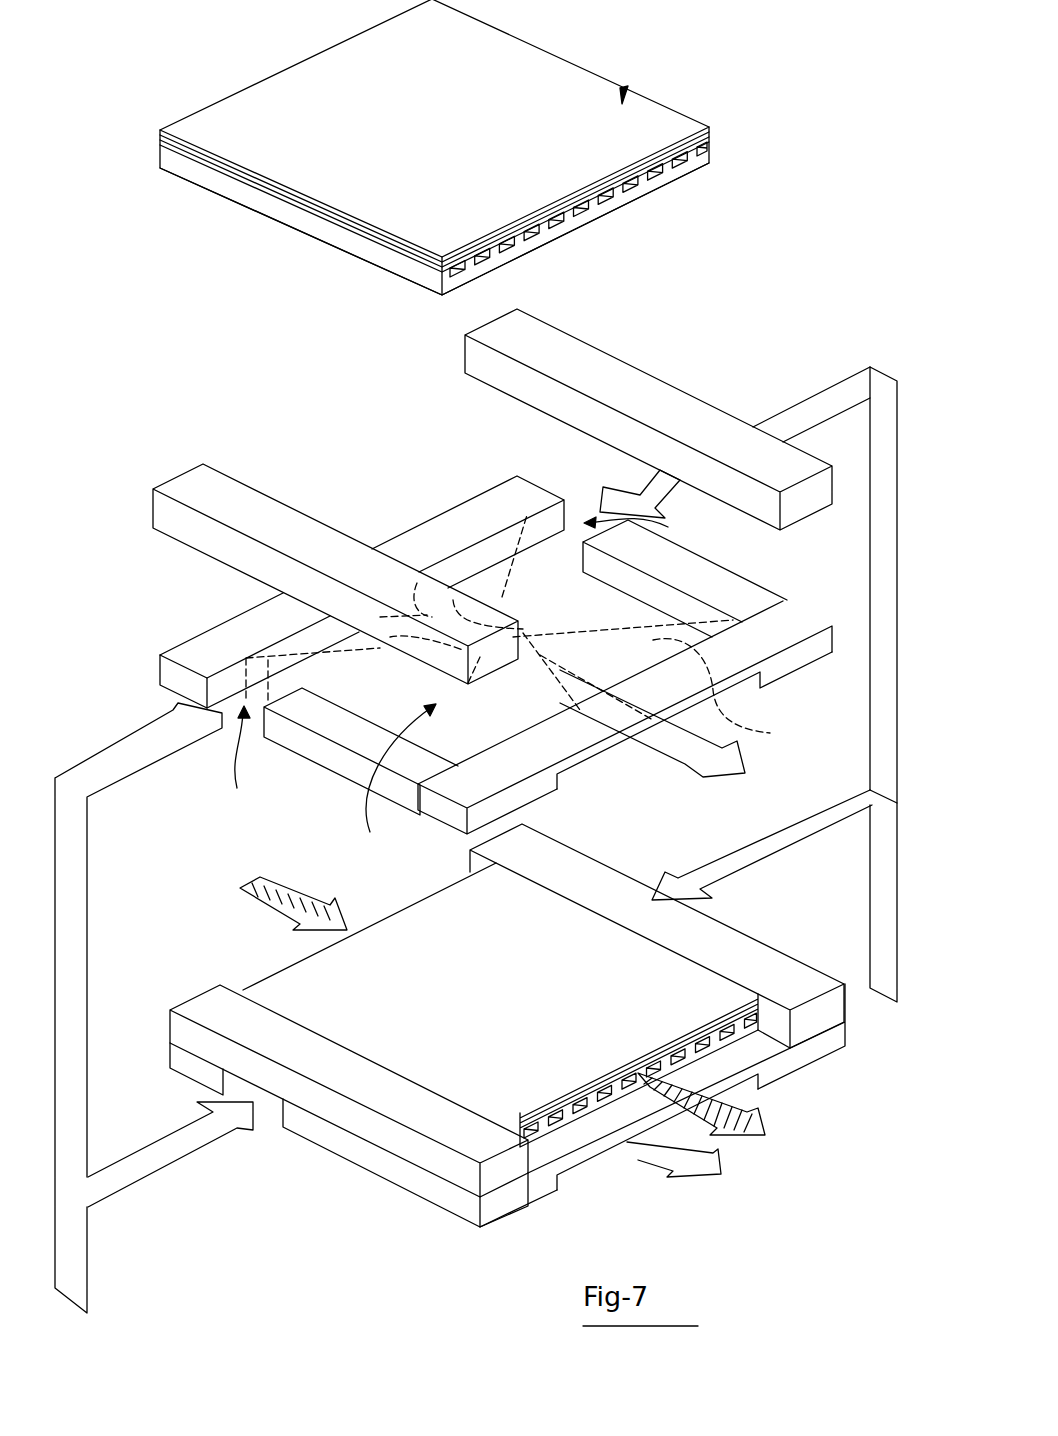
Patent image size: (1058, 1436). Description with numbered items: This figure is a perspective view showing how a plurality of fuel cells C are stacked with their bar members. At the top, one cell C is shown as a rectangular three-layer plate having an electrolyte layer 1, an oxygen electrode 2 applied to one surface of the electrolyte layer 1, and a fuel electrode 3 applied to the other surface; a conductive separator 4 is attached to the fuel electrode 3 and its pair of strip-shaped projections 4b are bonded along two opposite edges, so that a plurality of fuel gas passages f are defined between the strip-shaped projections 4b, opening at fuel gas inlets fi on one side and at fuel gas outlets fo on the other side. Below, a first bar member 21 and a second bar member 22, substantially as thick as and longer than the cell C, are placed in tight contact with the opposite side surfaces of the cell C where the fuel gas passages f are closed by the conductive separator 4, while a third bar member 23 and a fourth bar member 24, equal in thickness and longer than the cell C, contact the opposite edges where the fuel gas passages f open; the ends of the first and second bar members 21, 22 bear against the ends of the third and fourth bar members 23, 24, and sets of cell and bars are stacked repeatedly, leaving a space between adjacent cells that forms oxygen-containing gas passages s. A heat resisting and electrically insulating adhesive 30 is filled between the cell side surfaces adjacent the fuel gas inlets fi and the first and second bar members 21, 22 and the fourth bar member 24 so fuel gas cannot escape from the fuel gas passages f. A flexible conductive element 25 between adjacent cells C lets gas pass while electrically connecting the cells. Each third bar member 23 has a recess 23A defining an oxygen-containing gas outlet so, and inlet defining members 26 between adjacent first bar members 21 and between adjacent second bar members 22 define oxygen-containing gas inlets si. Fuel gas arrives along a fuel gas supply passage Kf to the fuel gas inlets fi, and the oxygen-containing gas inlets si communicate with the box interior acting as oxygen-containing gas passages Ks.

The fuel gas inlet fi is at (479, 573).
The conductive separator 4 is at (623, 36).
The fuel cell C is at (626, 88).
The oxygen electrode 2 is at (668, 113).
The electrolyte layer 1 is at (710, 134).
The strip-shaped projection 4b is at (703, 147).
The fuel electrode 3 is at (676, 158).
The fuel gas passage f is at (578, 212).
The fuel gas outlet fo is at (590, 223).
The second bar member 22 is at (480, 375).
The first bar member 21 is at (222, 490).
The oxygen-containing gas passage Ks is at (806, 410).
The fourth bar member 24 is at (207, 643).
The inlet defining member 26 is at (357, 768).
The third bar member 23 is at (632, 907).
The recess 23A is at (558, 779).
The flexible conductive element 25 is at (732, 694).
The oxygen-containing gas inlet si is at (447, 642).
The oxygen-containing gas outlet so is at (603, 766).
The oxygen-containing gas passage s is at (393, 775).
The heat resisting and electrically insulating adhesive 30 is at (466, 872).
The fuel gas supply passage Kf is at (242, 890).